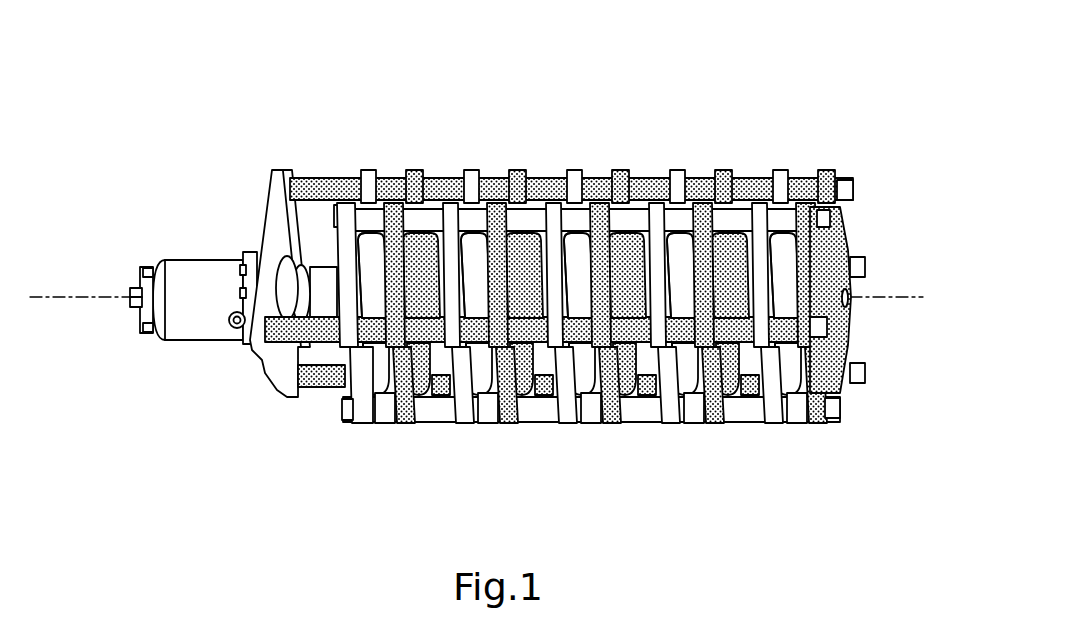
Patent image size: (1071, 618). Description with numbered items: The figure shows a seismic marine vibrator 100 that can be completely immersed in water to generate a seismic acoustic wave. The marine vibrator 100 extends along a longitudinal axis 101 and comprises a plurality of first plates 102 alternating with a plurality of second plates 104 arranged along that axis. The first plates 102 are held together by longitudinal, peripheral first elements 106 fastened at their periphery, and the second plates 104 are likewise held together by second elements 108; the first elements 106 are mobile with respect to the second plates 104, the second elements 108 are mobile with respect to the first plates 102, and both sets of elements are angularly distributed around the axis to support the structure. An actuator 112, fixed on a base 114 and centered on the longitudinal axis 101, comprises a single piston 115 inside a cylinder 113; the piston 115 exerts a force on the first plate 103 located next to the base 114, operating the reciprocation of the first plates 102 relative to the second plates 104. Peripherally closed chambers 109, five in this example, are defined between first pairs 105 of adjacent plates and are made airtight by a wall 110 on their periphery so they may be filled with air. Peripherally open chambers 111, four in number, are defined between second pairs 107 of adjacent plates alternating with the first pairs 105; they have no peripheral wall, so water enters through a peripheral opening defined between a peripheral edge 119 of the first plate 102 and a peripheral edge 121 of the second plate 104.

The seismic marine vibrator 100 is at (184, 422).
The longitudinal axis 101 is at (78, 297).
The first plate 102 is at (465, 190).
The first plate located next to the base 103 is at (350, 400).
The second plate 104 is at (517, 185).
The first pair of adjacent plates 105 is at (576, 262).
The first element 106 is at (692, 180).
The second pair of adjacent plates 107 is at (595, 316).
The second element 108 is at (756, 180).
The peripherally closed chamber 109 is at (368, 240).
The wall 110 is at (378, 205).
The peripherally open chamber 111 is at (633, 250).
The actuator 112 is at (221, 246).
The cylinder 113 is at (200, 257).
The base 114 is at (267, 197).
The piston 115 is at (325, 287).
The peripheral edge of the first plate 119 is at (366, 395).
The peripheral edge of the second plate 121 is at (466, 212).